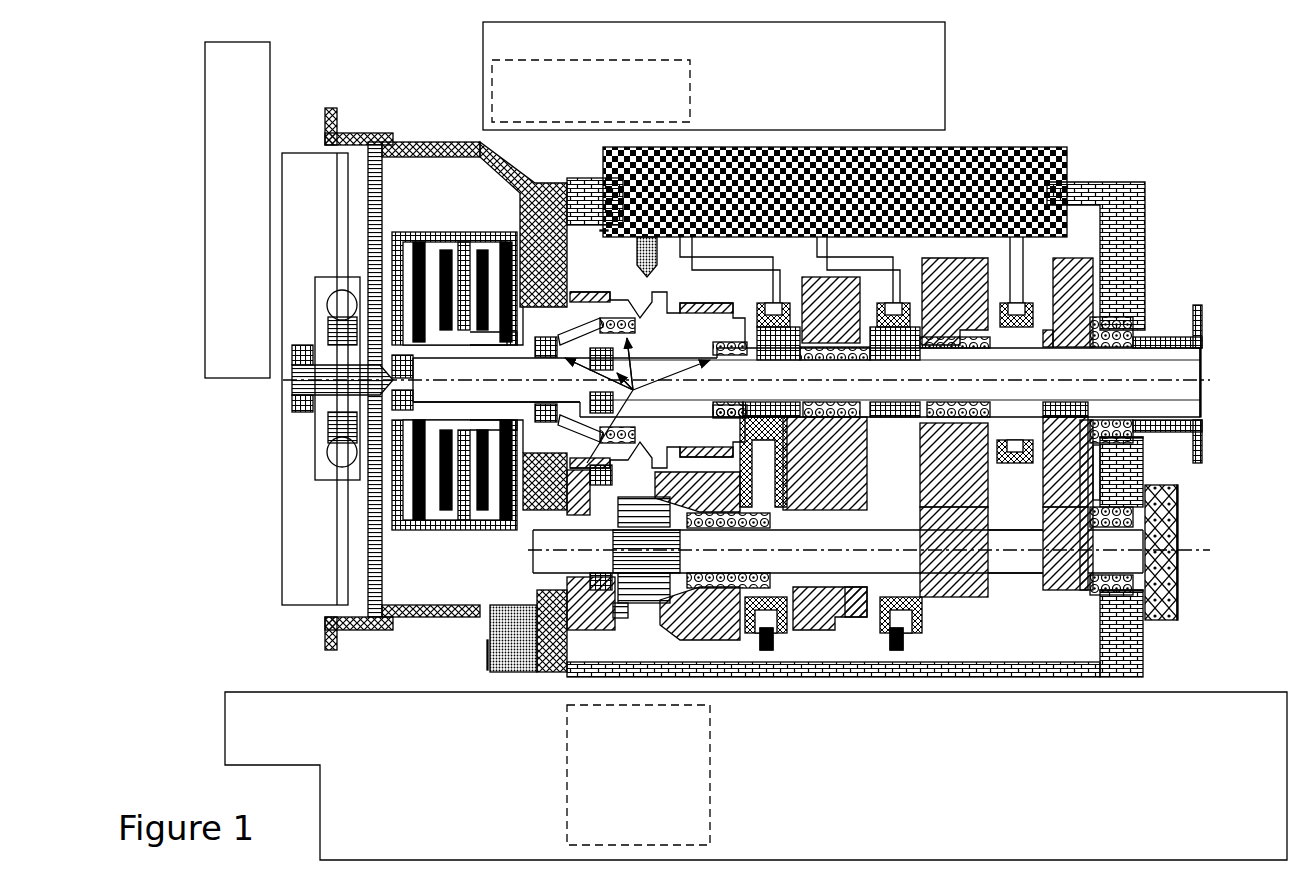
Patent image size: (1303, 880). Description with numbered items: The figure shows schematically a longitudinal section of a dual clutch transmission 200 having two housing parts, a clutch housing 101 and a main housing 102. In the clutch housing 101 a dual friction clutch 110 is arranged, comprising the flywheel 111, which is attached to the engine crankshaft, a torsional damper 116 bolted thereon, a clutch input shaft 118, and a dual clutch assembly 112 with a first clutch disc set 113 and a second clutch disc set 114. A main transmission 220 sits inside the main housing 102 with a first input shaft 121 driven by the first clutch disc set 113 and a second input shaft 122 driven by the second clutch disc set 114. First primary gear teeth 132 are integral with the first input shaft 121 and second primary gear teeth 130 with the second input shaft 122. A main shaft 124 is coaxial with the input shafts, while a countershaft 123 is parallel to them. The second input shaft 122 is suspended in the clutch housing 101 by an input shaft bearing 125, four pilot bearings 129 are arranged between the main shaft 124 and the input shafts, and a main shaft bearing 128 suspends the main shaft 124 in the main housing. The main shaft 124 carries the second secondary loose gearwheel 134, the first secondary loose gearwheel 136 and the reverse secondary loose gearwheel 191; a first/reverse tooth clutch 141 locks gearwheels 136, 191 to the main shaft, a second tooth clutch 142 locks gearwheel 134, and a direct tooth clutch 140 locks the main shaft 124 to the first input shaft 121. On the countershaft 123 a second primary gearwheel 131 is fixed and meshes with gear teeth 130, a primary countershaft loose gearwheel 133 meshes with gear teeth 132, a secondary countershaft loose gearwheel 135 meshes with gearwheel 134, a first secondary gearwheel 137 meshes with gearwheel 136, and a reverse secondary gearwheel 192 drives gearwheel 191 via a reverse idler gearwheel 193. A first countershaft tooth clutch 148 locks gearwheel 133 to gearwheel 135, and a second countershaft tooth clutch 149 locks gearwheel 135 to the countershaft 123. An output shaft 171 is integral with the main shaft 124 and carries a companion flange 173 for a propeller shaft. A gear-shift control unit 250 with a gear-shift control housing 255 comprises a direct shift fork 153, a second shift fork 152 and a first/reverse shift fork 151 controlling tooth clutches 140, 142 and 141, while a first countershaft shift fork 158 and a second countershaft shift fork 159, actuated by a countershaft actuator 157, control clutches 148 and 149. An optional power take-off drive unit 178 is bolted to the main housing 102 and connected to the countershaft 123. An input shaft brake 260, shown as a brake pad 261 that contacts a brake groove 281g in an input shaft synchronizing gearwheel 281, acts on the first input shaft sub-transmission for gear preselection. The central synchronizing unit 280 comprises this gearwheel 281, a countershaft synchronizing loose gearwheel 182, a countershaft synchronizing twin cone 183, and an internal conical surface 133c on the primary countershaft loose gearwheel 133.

The dual clutch transmission 200 is at (402, 68).
The clutch housing 101 is at (457, 143).
The main housing 102 is at (1110, 180).
The dual friction clutch 110 is at (276, 323).
The flywheel 111 is at (302, 160).
The dual clutch assembly 112 is at (457, 231).
The first clutch disc set 113 is at (425, 338).
The second clutch disc set 114 is at (472, 330).
The torsional damper 116 is at (342, 308).
The clutch input shaft 118 is at (335, 373).
The first input shaft 121 is at (488, 392).
The second input shaft 122 is at (528, 438).
The countershaft 123 is at (1067, 590).
The main shaft 124 is at (827, 627).
The input shaft bearing 125 is at (543, 463).
The main shaft bearing 128 is at (1177, 550).
The pilot bearings 129 is at (557, 673).
The second primary gear teeth 130 is at (555, 520).
The second primary gearwheel 131 is at (587, 463).
The first primary gear teeth 132 is at (752, 628).
The primary countershaft loose gearwheel 133 is at (713, 648).
The internal conical surface 133c is at (650, 612).
The second secondary loose gearwheel 134 is at (935, 600).
The secondary countershaft loose gearwheel 135 is at (880, 640).
The first secondary loose gearwheel 136 is at (1047, 533).
The first secondary gearwheel 137 is at (1010, 465).
The direct tooth clutch 140 is at (860, 600).
The first/reverse tooth clutch 141 is at (1090, 560).
The second tooth clutch 142 is at (1000, 588).
The first countershaft tooth clutch 148 is at (815, 590).
The second countershaft tooth clutch 149 is at (968, 600).
The first/reverse shift fork 151 is at (1007, 258).
The second shift fork 152 is at (865, 252).
The direct shift fork 153 is at (735, 252).
The countershaft actuator 157 is at (487, 655).
The first countershaft shift fork 158 is at (773, 652).
The second countershaft shift fork 159 is at (907, 640).
The output shaft 171 is at (1153, 368).
The companion flange 173 is at (1200, 303).
The power take-off drive unit 178 is at (1180, 530).
The countershaft synchronizing loose gearwheel 182 is at (632, 622).
The countershaft synchronizing twin cone 183 is at (645, 615).
The reverse secondary loose gearwheel 191 is at (1150, 620).
The reverse secondary gearwheel 192 is at (1130, 600).
The reverse idler gearwheel 193 is at (1110, 600).
The main transmission 220 is at (756, 776).
The gear-shift control unit 250 is at (714, 245).
The gear-shift control housing 255 is at (780, 145).
The input shaft brake 260 is at (591, 142).
The brake pad 261 is at (648, 237).
The central synchronizing unit 280 is at (638, 775).
The input shaft synchronizing gearwheel 281 is at (665, 590).
The brake groove 281g is at (648, 290).